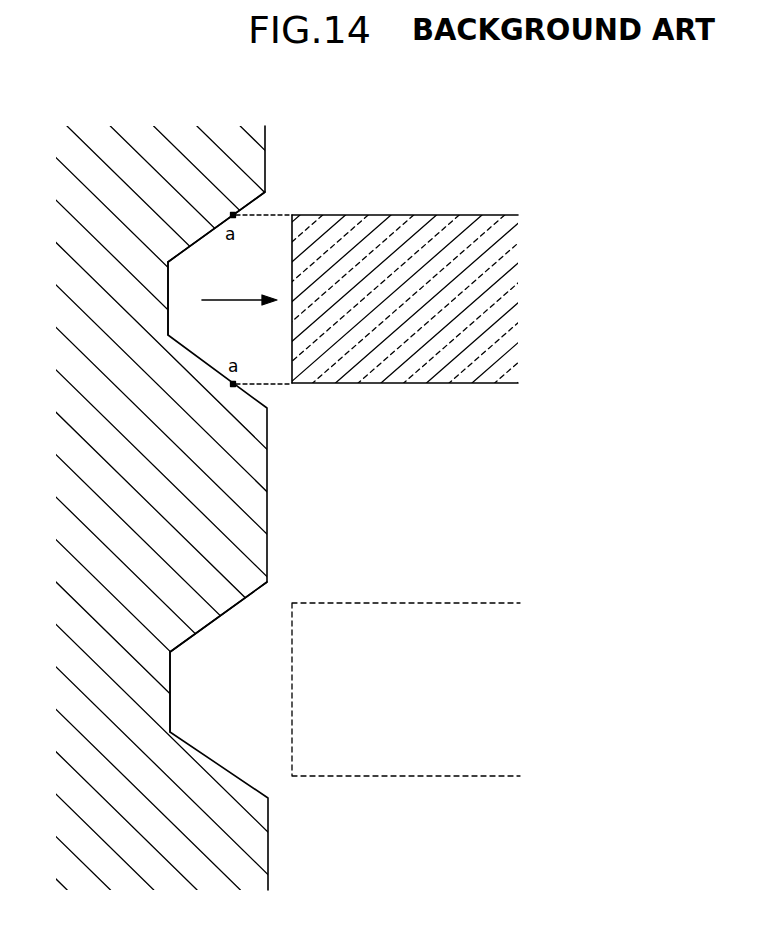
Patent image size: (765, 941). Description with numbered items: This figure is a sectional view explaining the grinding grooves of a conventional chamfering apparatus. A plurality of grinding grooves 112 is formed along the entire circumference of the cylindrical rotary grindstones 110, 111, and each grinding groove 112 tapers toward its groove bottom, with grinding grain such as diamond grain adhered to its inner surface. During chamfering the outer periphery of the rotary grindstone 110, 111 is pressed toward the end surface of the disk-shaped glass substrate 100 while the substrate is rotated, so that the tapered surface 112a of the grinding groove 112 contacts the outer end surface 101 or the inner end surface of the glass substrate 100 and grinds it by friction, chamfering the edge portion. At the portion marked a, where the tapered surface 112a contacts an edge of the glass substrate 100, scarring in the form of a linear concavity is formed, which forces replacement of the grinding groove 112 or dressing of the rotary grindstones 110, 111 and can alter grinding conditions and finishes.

The rotary grindstone 110 is at (382, 508).
The rotary grindstone 111 is at (265, 137).
The grinding groove 112 is at (168, 296).
The tapered surface 112a is at (183, 248).
The glass substrate 100 is at (483, 215).
The outer end surface 101 is at (360, 318).